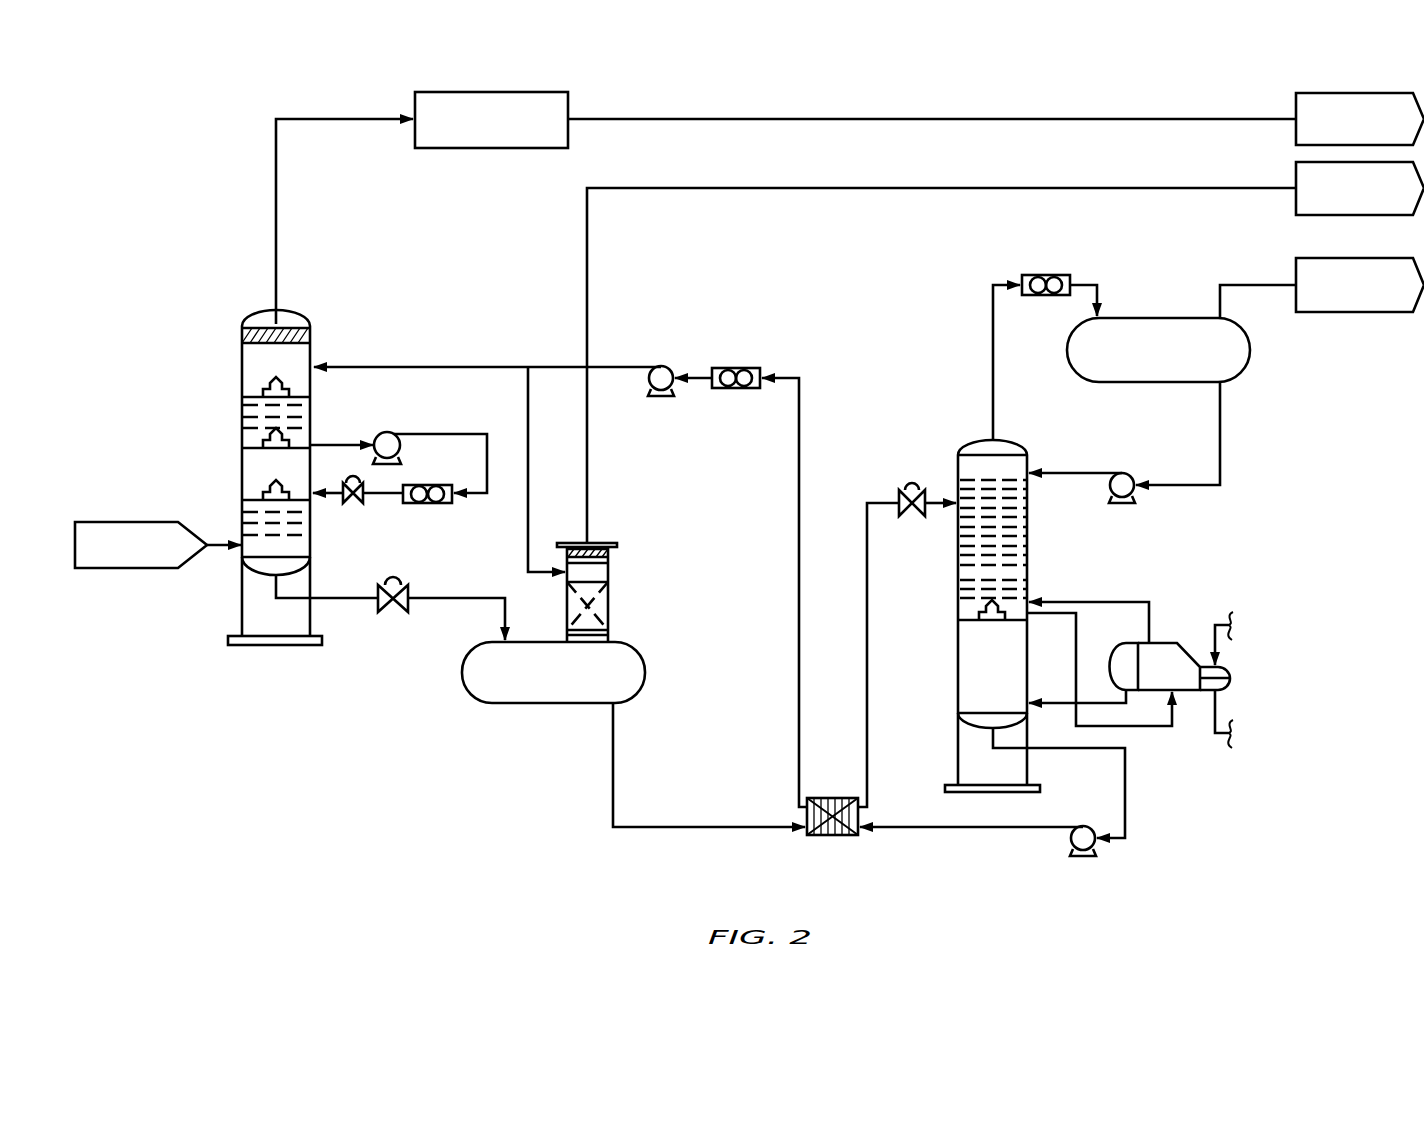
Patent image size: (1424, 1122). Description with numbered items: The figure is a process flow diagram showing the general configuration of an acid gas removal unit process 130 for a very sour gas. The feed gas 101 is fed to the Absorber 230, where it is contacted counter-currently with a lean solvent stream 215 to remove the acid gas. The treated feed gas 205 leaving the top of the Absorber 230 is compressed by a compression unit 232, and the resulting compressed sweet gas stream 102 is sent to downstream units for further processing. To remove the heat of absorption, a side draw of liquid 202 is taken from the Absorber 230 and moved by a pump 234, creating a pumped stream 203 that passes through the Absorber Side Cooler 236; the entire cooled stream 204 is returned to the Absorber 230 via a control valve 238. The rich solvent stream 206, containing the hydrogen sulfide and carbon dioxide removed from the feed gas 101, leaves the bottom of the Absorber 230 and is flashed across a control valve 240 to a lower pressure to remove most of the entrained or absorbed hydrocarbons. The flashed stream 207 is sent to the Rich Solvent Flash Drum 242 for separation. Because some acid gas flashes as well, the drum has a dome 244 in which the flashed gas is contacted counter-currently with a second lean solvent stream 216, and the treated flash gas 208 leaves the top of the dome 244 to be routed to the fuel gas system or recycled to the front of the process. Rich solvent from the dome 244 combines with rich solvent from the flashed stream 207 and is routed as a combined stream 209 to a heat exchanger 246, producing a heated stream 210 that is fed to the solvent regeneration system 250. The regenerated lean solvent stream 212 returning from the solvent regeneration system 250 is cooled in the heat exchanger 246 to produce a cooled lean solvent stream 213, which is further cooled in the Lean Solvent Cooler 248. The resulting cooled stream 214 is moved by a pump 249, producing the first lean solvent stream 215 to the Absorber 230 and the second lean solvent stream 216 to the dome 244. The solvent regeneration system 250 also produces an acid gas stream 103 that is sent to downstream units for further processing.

The AGRU process 130 is at (749, 475).
The compressed sweet gas stream 102 is at (996, 114).
The treated flash gas 208 is at (1005, 349).
The treated feed gas 205 is at (344, 221).
The compression unit 232 is at (491, 137).
The absorber 230 is at (243, 477).
The feed gas 101 is at (158, 529).
The side draw of liquid 202 is at (341, 417).
The pumped stream 203 is at (457, 446).
The pump 234 is at (422, 420).
The absorber side cooler 236 is at (449, 492).
The control valve 238 is at (352, 514).
The cooled stream 204 is at (361, 529).
The lean solvent stream 215 is at (487, 340).
The lean solvent stream 216 is at (507, 469).
The cooled stream 214 is at (662, 391).
The pump 249 is at (625, 389).
The lean solvent cooler 248 is at (771, 338).
The cooled lean solvent stream 213 is at (815, 592).
The control valve 240 is at (429, 587).
The rich solvent stream 206 is at (327, 612).
The flashed stream 207 is at (456, 624).
The dome 244 is at (634, 596).
The rich solvent flash drum 242 is at (547, 692).
The combined stream 209 is at (701, 785).
The heat exchanger 246 is at (830, 812).
The heated stream 210 is at (907, 645).
The regenerated (lean) solvent stream 212 is at (971, 847).
The acid gas stream 103 is at (1322, 274).
The solvent regeneration system 250 is at (1184, 552).